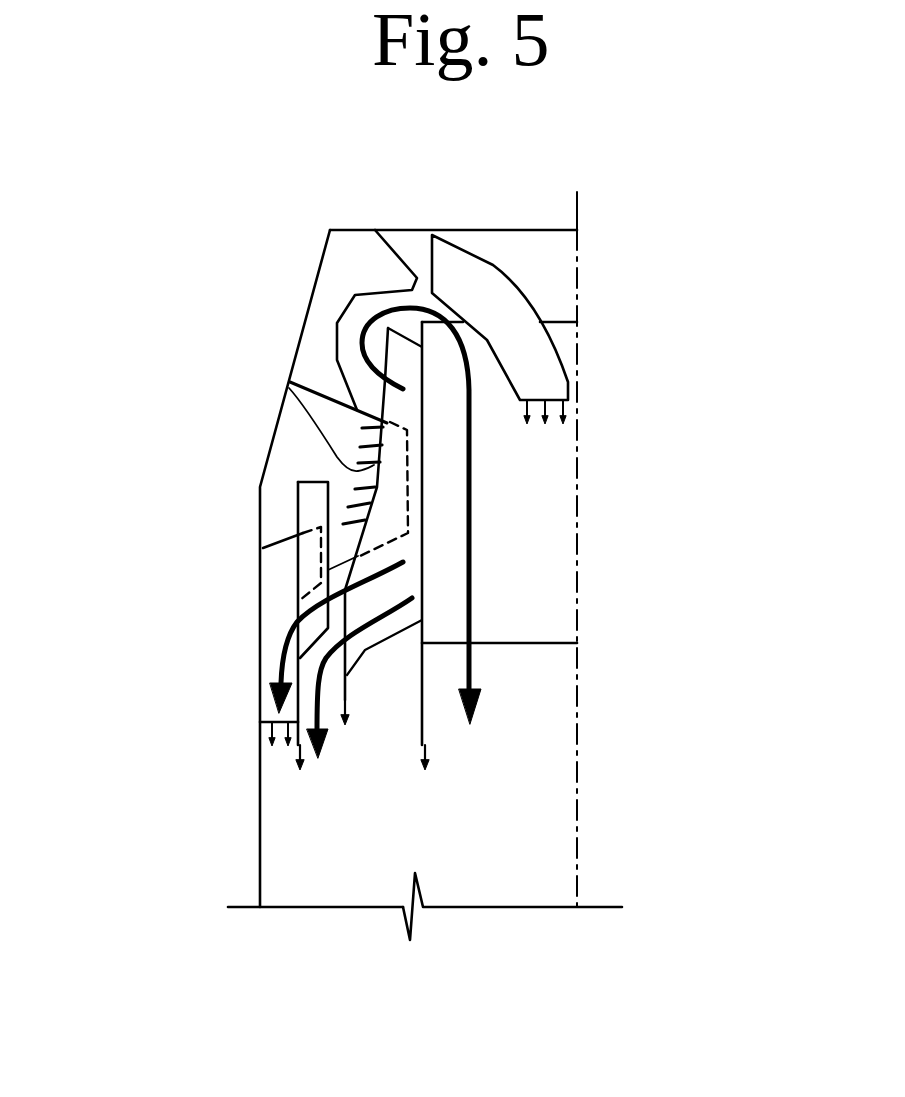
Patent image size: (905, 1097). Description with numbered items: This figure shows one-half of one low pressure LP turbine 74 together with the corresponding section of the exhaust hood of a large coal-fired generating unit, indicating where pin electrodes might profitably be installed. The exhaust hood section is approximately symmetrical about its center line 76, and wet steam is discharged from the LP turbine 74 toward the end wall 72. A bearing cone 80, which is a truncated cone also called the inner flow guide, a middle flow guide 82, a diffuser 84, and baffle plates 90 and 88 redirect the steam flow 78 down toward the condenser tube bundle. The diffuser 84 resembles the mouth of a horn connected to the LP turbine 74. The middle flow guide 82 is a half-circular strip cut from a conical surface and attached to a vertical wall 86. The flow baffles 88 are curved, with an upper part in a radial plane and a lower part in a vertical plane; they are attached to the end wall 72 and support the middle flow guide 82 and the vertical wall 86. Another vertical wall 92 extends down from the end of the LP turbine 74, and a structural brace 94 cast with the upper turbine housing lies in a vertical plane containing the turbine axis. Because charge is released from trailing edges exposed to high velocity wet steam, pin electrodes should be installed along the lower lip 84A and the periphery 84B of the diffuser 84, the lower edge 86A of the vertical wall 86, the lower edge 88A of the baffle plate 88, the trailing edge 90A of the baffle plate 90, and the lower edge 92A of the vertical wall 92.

The end wall 72 is at (260, 870).
The LP turbine 74 is at (528, 545).
The center line 76 is at (579, 835).
The steam flow 78 is at (473, 588).
The bearing cone 80 is at (297, 463).
The middle flow guide 82 is at (310, 497).
The diffuser 84 is at (410, 412).
The lower lip of diffuser 84A is at (345, 724).
The periphery of diffuser 84B is at (290, 381).
The vertical wall 86 is at (300, 684).
The lower edge of vertical wall 86A is at (302, 762).
The flow baffle 88 is at (278, 572).
The lower edge of baffle plate 88A is at (271, 735).
The baffle plate 90 is at (500, 293).
The trailing edge of baffle plate 90A is at (563, 415).
The vertical wall 92 is at (423, 730).
The lower edge of vertical wall 92A is at (428, 752).
The structural brace 94 is at (347, 258).